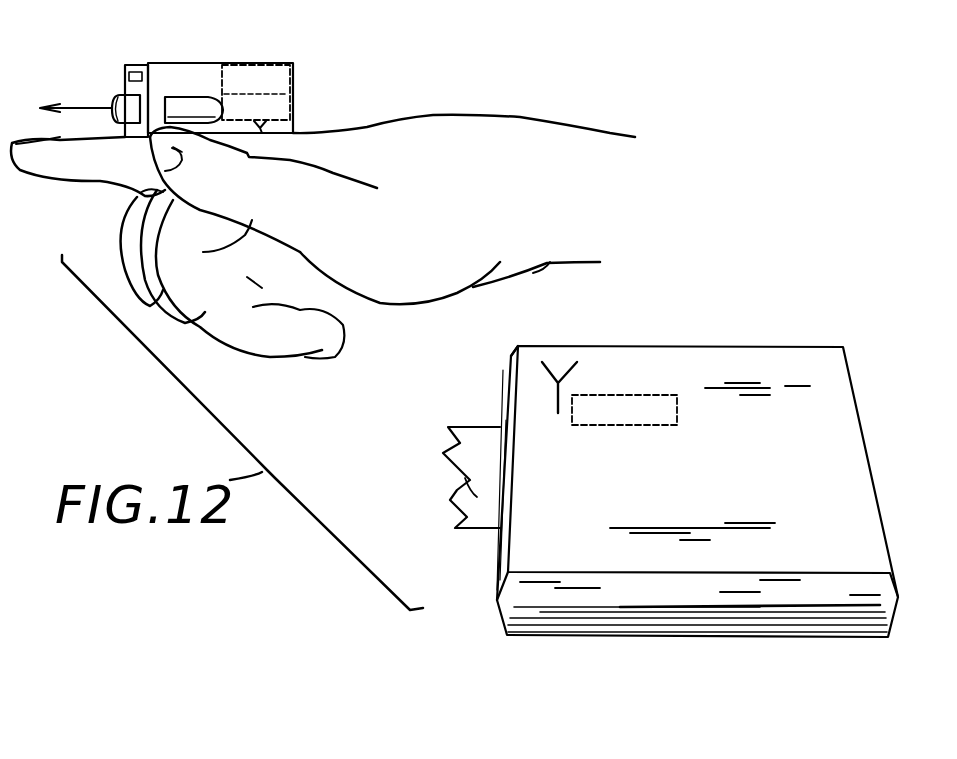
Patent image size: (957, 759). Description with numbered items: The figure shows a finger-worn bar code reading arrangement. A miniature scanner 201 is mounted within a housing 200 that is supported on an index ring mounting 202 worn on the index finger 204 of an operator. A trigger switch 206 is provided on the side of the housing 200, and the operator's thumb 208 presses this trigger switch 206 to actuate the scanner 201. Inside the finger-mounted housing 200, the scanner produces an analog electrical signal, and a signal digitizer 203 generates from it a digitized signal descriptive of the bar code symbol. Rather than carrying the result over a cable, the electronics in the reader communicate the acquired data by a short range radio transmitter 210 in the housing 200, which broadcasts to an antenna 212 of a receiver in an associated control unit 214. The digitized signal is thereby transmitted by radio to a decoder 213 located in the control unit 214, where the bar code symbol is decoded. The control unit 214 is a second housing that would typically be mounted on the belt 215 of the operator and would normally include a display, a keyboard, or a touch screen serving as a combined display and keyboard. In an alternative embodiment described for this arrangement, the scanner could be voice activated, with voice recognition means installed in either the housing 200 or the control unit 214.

The housing 200 is at (200, 91).
The miniature scanner 201 is at (295, 77).
The index ring mounting 202 is at (125, 195).
The signal digitizer 203 is at (291, 100).
The index finger 204 is at (118, 168).
The trigger switch 206 is at (203, 100).
The thumb 208 is at (262, 191).
The short range radio transmitter 210 is at (264, 125).
The antenna 212 is at (563, 400).
The decoder 213 is at (638, 395).
The control unit 214 is at (675, 460).
The belt 215 is at (460, 485).